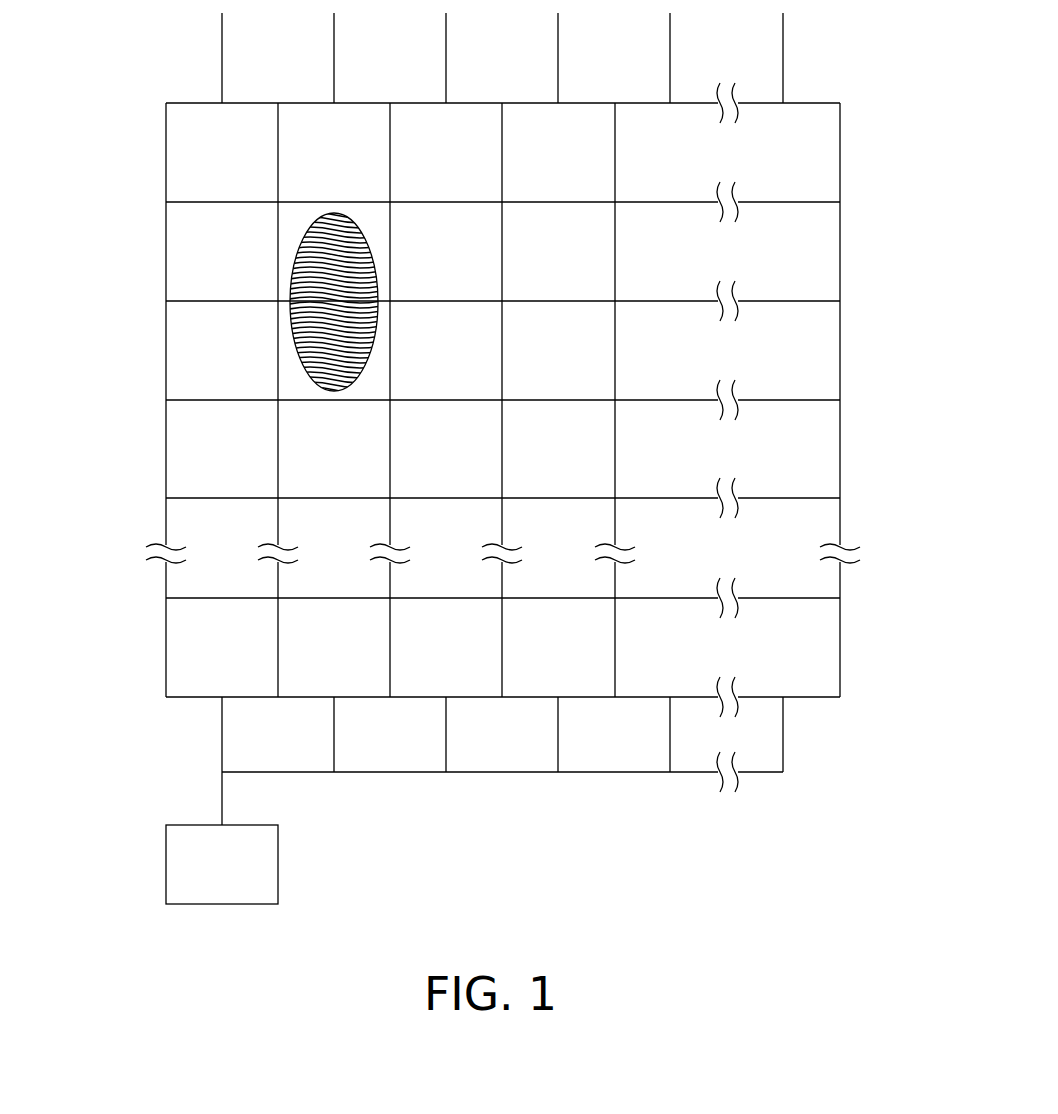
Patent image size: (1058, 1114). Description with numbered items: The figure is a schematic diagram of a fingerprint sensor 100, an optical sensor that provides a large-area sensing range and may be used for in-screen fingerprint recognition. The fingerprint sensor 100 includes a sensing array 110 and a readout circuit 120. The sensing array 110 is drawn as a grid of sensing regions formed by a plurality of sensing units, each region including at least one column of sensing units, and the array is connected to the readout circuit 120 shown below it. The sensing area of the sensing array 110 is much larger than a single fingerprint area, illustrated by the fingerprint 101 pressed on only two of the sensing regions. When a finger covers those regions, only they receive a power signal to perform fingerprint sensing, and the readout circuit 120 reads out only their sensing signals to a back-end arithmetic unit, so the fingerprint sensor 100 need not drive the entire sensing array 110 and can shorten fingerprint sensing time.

The fingerprint sensor 100 is at (888, 908).
The sensing array 110 is at (185, 100).
The fingerprint 101 is at (292, 272).
The readout circuit 120 is at (258, 871).